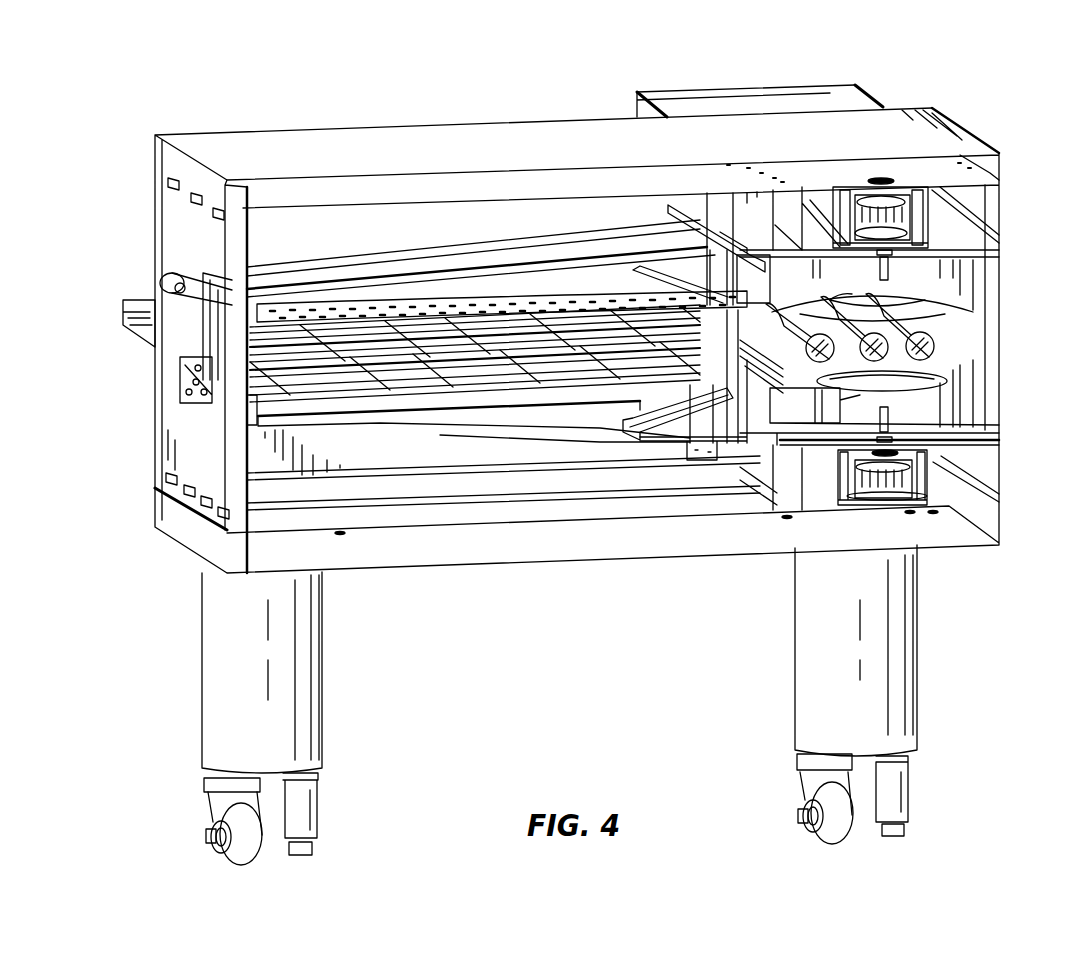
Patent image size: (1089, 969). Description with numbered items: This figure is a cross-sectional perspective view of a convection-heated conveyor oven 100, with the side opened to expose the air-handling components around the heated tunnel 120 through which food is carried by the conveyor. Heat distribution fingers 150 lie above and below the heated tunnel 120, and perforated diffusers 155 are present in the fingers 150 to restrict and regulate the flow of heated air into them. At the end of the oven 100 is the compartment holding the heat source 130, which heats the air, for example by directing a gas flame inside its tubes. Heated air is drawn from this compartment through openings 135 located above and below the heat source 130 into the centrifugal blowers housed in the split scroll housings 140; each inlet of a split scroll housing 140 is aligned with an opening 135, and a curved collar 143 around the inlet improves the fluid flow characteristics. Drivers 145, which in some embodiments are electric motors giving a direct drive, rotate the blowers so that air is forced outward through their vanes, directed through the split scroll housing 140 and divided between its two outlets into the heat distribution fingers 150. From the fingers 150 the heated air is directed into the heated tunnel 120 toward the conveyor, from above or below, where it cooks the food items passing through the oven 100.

The convection-heated conveyor oven 100 is at (958, 598).
The heated tunnel 120 is at (752, 355).
The heat source 130 is at (929, 340).
The openings 135 is at (950, 313).
The split scroll housing 140 is at (940, 268).
The curved collar 143 is at (930, 374).
The drivers 145 is at (922, 185).
The heat distribution fingers 150 is at (413, 268).
The perforated diffusers 155 is at (668, 275).